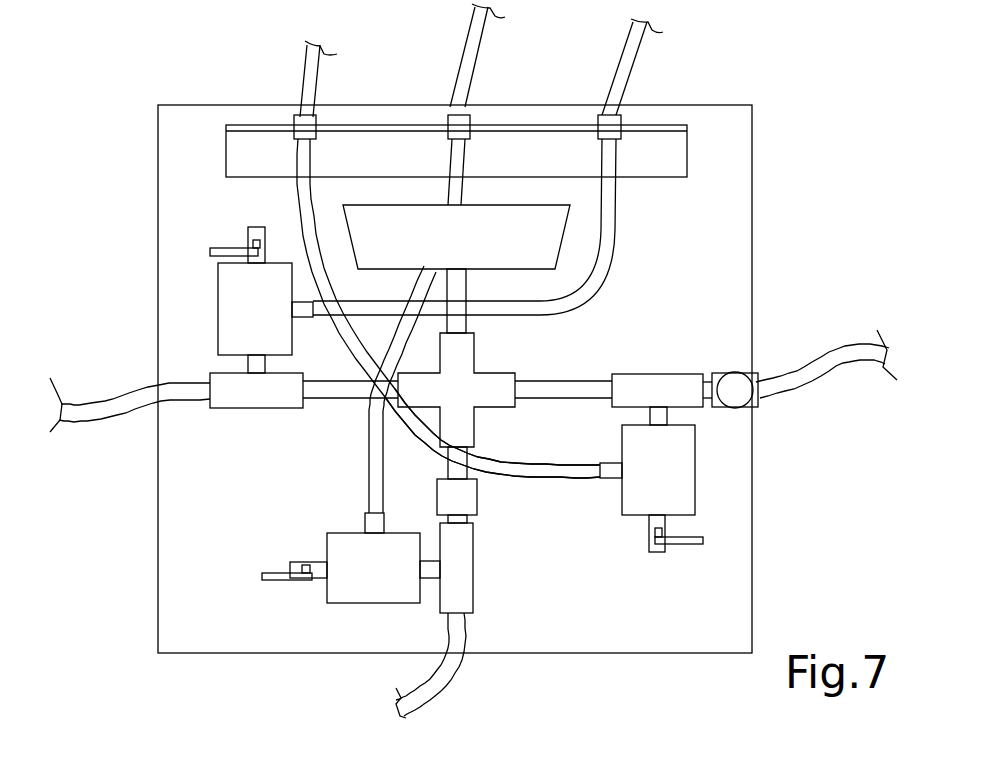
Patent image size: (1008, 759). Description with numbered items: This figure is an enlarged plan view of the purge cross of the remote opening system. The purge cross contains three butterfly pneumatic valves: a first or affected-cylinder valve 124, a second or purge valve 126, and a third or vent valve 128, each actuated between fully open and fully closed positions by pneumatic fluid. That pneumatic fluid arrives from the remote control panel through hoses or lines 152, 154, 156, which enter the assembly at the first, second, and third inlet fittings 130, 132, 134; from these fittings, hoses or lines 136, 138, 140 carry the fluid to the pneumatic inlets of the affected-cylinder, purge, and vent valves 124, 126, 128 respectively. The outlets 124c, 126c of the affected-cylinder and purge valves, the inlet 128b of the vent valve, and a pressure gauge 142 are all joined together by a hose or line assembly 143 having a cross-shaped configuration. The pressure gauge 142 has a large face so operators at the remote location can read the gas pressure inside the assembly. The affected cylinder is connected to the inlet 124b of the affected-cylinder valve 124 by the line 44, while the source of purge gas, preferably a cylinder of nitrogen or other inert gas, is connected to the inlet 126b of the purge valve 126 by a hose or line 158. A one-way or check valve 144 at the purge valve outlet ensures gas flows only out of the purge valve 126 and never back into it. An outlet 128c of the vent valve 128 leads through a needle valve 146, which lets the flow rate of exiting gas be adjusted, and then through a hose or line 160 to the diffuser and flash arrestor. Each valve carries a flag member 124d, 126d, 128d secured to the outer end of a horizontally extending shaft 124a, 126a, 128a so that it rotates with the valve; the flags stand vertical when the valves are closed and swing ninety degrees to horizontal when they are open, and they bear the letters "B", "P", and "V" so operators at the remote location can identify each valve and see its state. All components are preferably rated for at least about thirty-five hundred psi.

The line 44 is at (117, 417).
The affected-cylinder valve 124 is at (218, 318).
The shaft 124a is at (246, 236).
The inlet 124b is at (205, 378).
The outlet 124c is at (345, 408).
The flag member 124d is at (220, 250).
The purge valve 126 is at (373, 604).
The shaft 126a is at (300, 562).
The inlet 126b is at (471, 613).
The outlet 126c is at (474, 524).
The flag member 126d is at (282, 581).
The vent valve 128 is at (695, 470).
The shaft 128a is at (665, 527).
The inlet 128b is at (608, 375).
The outlet 128c is at (709, 373).
The flag member 128d is at (690, 546).
The first inlet fitting 130 is at (618, 117).
The second inlet fitting 132 is at (466, 117).
The third inlet fitting 134 is at (312, 117).
The hose or line 136 is at (602, 262).
The hose or line 138 is at (366, 480).
The hose or line 140 is at (530, 473).
The pressure gauge 142 is at (567, 232).
The hose or line assembly 143 is at (493, 373).
The check valve 144 is at (478, 494).
The needle valve 146 is at (733, 372).
The hose or line 152 is at (638, 50).
The hose or line 154 is at (477, 43).
The hose or line 156 is at (322, 53).
The hose or line 158 is at (455, 690).
The hose or line 160 is at (807, 387).